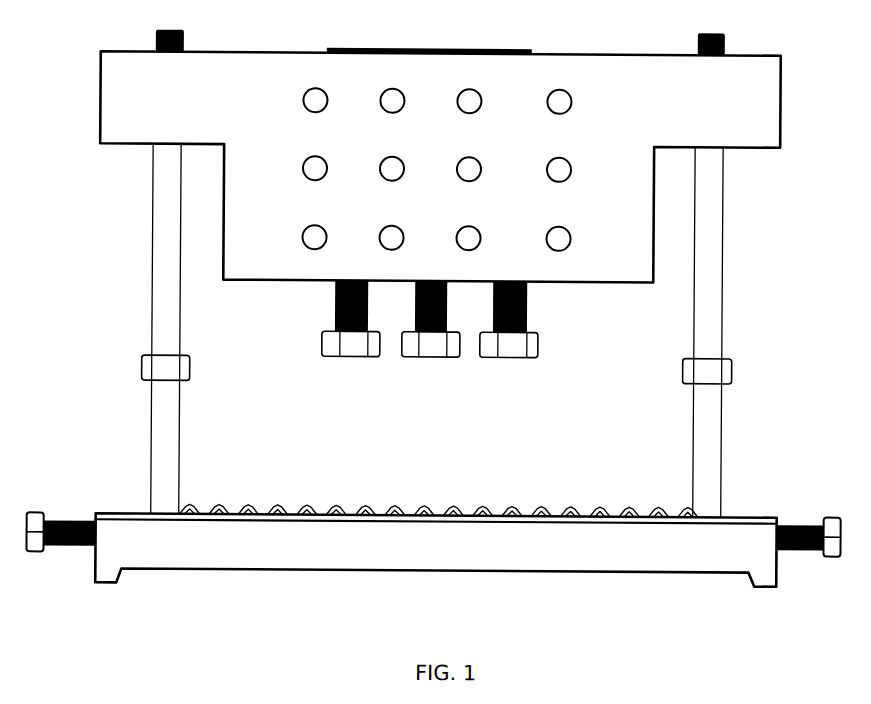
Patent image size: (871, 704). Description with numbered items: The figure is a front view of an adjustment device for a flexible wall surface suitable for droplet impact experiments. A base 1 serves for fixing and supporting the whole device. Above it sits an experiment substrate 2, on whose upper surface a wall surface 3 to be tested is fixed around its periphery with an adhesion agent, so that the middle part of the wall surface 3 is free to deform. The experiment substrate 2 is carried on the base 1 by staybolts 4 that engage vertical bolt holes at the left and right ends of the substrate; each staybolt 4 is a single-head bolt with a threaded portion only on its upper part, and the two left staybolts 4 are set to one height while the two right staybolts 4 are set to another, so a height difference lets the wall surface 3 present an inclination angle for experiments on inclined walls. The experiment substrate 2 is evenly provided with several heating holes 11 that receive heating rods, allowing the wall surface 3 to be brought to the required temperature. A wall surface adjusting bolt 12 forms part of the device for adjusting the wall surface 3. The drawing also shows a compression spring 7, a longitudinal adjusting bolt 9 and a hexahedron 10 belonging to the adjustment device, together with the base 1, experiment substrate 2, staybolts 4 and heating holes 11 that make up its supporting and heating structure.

The base 1 is at (436, 566).
The experiment substrate 2 is at (440, 147).
The wall surface to be tested 3 is at (429, 30).
The staybolt 4 is at (410, 330).
The compression spring 7 is at (439, 486).
The longitudinal adjusting bolt 9 is at (433, 502).
The hexahedron 10 is at (403, 346).
The heating hole 11 is at (459, 132).
The wall surface adjusting bolt 12 is at (446, 343).